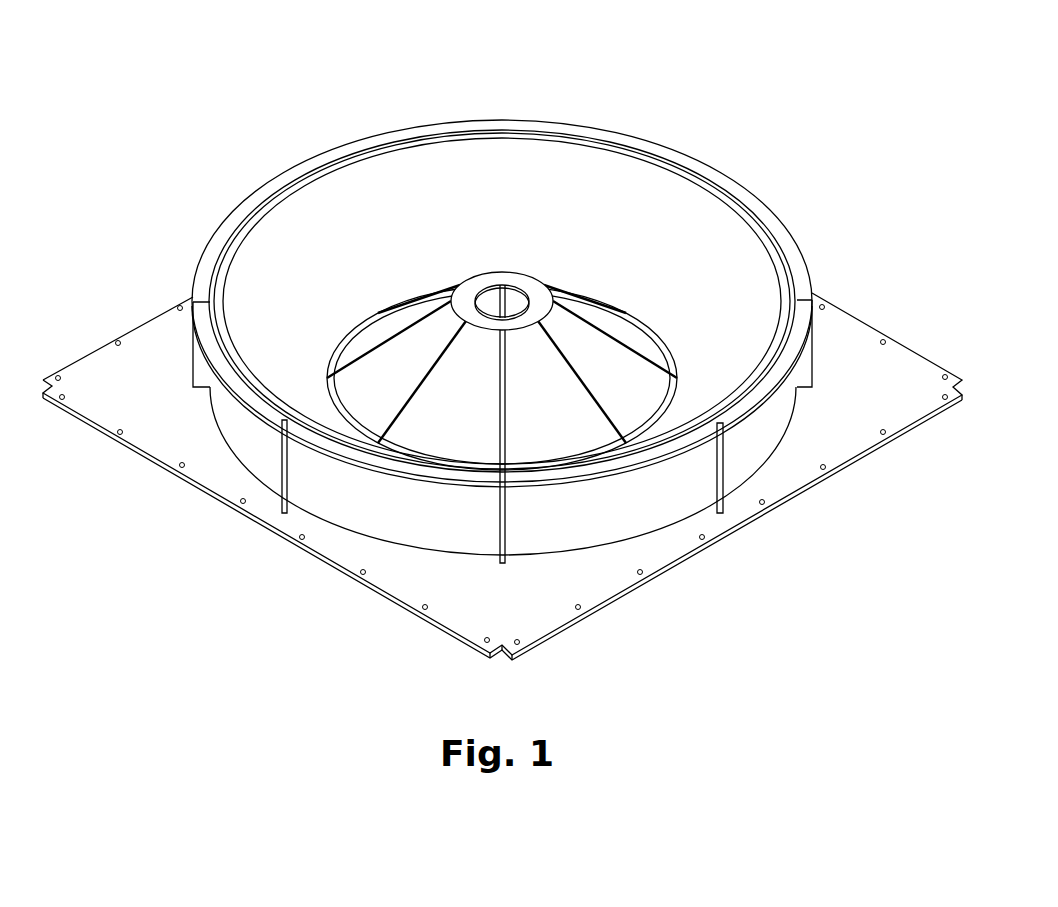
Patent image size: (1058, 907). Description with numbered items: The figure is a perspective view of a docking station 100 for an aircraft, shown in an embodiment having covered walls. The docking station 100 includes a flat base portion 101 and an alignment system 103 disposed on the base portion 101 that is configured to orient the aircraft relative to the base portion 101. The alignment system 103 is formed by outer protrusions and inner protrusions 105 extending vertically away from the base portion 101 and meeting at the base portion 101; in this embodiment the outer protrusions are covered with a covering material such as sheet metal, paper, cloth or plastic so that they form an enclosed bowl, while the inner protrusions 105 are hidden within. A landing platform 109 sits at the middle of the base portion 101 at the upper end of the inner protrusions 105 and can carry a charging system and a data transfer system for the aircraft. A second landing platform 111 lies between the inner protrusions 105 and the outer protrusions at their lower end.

The docking station 100 is at (502, 344).
The base portion 101 is at (380, 561).
The alignment system 103 is at (649, 252).
The support spokes 105 is at (418, 315).
The landing platform 109 is at (488, 280).
The landing platform 111 is at (333, 375).